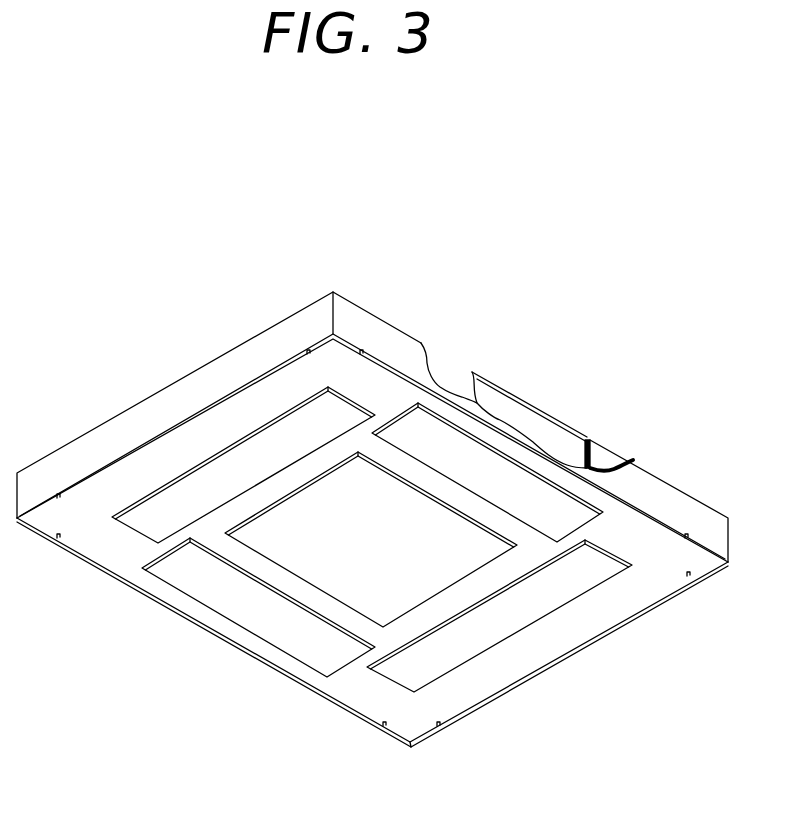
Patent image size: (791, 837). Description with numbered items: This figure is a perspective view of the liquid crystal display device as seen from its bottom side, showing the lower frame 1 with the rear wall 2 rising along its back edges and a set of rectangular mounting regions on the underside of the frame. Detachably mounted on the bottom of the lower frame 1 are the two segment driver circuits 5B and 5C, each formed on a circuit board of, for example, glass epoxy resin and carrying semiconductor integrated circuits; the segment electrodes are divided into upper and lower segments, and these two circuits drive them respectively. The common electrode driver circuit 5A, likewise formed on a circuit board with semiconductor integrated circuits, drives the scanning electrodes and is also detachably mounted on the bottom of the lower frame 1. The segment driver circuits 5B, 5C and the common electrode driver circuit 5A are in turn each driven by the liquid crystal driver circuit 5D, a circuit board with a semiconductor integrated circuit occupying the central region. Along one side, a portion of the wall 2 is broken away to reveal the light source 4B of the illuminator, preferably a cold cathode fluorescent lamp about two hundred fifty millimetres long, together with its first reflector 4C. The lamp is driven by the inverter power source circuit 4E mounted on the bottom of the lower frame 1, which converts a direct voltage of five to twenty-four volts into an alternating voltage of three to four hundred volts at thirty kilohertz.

The lower frame 1 is at (152, 465).
The side wall 2 is at (245, 362).
The light source 4B is at (515, 405).
The first reflector 4C is at (607, 458).
The inverter power source circuit 4E is at (150, 520).
The common electrode driver circuit 5A is at (480, 635).
The segment driver circuit 5B is at (547, 522).
The segment driver circuit 5C is at (242, 605).
The liquid crystal driver circuit 5D is at (320, 582).